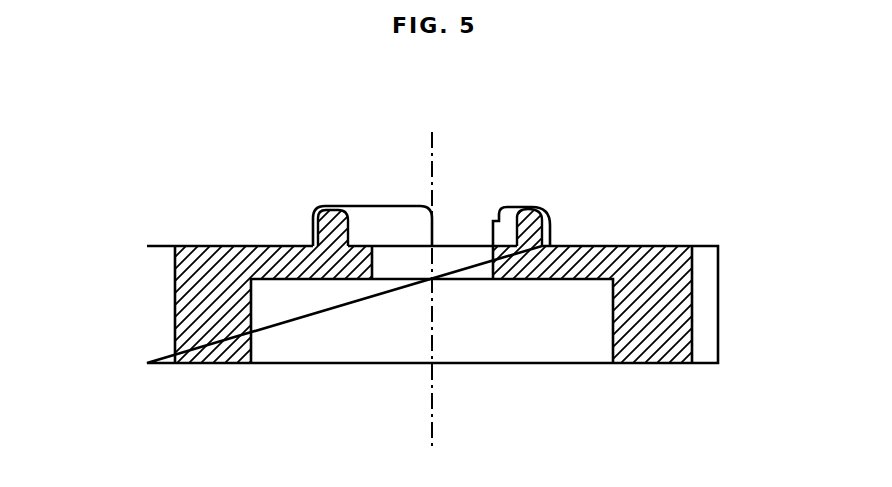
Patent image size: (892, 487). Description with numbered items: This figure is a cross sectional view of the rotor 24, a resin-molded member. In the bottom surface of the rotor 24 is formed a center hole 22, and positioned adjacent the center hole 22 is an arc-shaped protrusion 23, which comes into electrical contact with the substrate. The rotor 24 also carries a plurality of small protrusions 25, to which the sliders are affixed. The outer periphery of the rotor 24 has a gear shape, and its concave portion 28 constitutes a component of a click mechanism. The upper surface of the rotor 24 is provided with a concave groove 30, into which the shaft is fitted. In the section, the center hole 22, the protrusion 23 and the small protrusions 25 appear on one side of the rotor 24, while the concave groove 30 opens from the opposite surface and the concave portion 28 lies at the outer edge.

The center hole 22 is at (400, 268).
The arc-shaped protrusion 23 is at (535, 206).
The rotor 24 is at (702, 117).
The small protrusions 25 is at (330, 206).
The concave portion 28 is at (162, 275).
The concave groove 30 is at (545, 333).